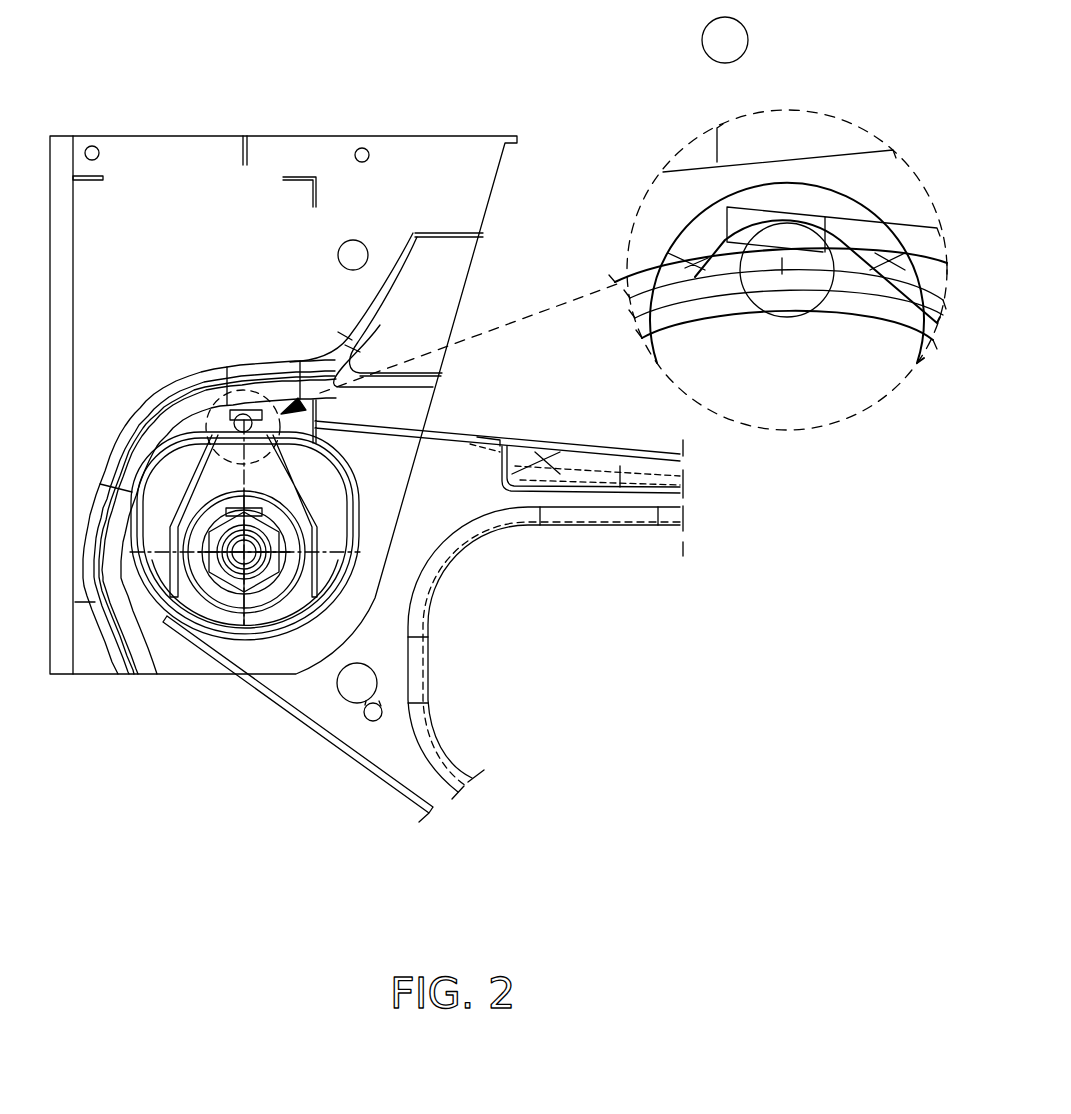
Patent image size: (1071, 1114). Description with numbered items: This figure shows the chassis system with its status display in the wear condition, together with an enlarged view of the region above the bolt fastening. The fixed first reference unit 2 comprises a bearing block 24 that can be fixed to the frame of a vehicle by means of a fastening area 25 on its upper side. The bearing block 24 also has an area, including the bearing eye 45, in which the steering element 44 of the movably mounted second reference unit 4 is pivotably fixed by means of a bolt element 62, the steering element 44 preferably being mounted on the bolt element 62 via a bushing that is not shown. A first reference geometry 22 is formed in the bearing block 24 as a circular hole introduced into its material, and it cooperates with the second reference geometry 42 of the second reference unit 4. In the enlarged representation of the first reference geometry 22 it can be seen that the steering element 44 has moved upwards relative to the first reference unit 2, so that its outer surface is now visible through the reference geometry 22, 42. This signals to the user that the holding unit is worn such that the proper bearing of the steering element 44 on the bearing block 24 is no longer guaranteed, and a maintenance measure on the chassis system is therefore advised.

The first reference unit 2 is at (102, 110).
The bearing block 24 is at (145, 248).
The fastening area 25 is at (300, 136).
The bearing eye 45 is at (338, 483).
The bolt element 62 is at (233, 560).
The first reference geometry 22 is at (817, 310).
The second reference geometry 42 is at (782, 258).
The second reference unit 4 is at (455, 684).
The steering element 44 is at (305, 690).